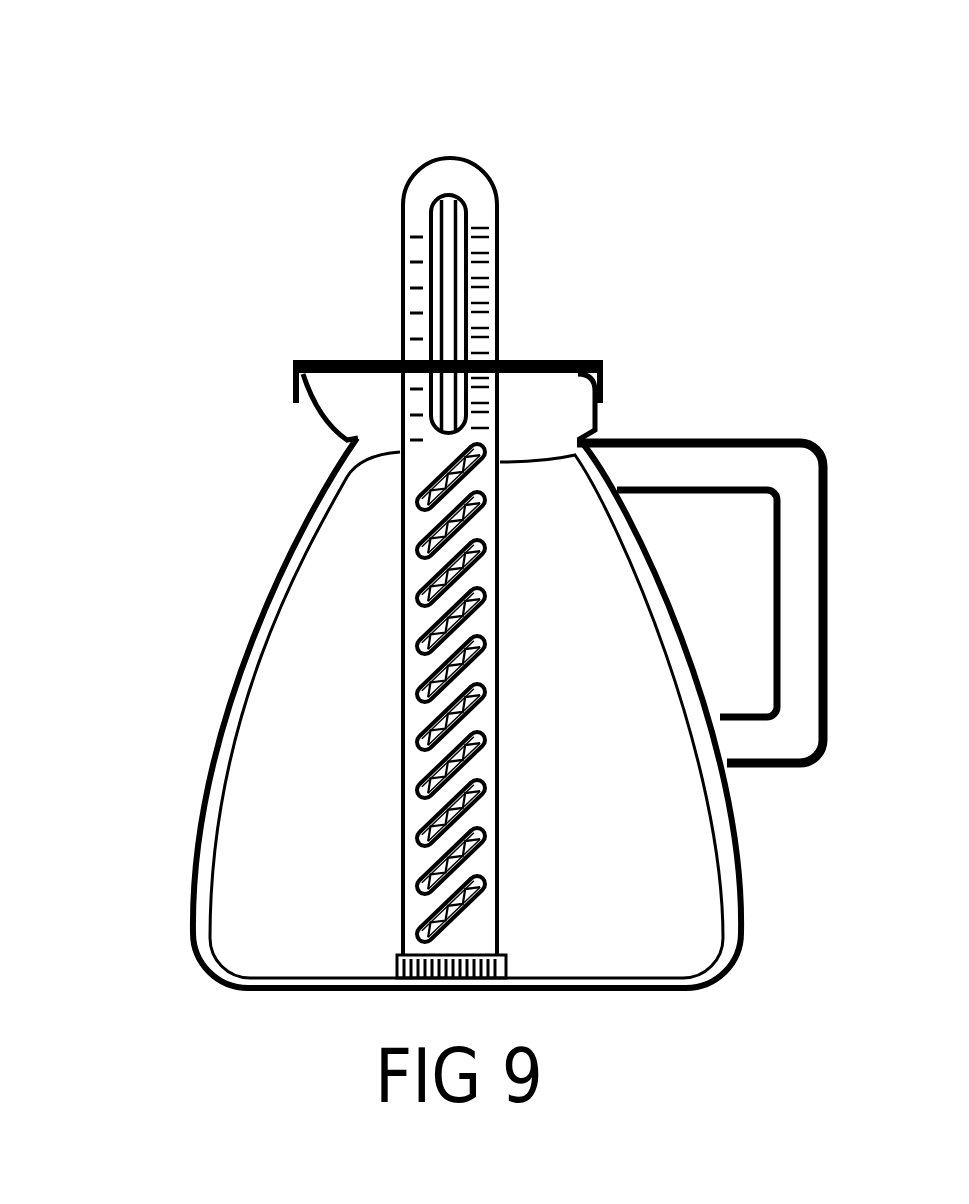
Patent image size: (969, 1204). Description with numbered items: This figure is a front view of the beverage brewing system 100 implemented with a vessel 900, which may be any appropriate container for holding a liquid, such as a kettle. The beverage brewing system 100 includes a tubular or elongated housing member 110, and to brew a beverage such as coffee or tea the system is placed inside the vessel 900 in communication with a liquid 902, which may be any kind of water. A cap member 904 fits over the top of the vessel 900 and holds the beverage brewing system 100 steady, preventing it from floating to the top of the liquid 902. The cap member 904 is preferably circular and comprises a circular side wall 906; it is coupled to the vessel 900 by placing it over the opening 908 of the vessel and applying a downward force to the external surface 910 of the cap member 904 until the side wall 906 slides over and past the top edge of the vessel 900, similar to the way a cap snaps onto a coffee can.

The beverage brewing system 100 is at (457, 489).
The elongated housing member 110 is at (477, 167).
The vessel 900 is at (470, 542).
The liquid 902 is at (320, 608).
The cap member 904 is at (366, 362).
The side wall 906 is at (362, 427).
The opening 908 is at (557, 362).
The external surface 910 is at (335, 362).